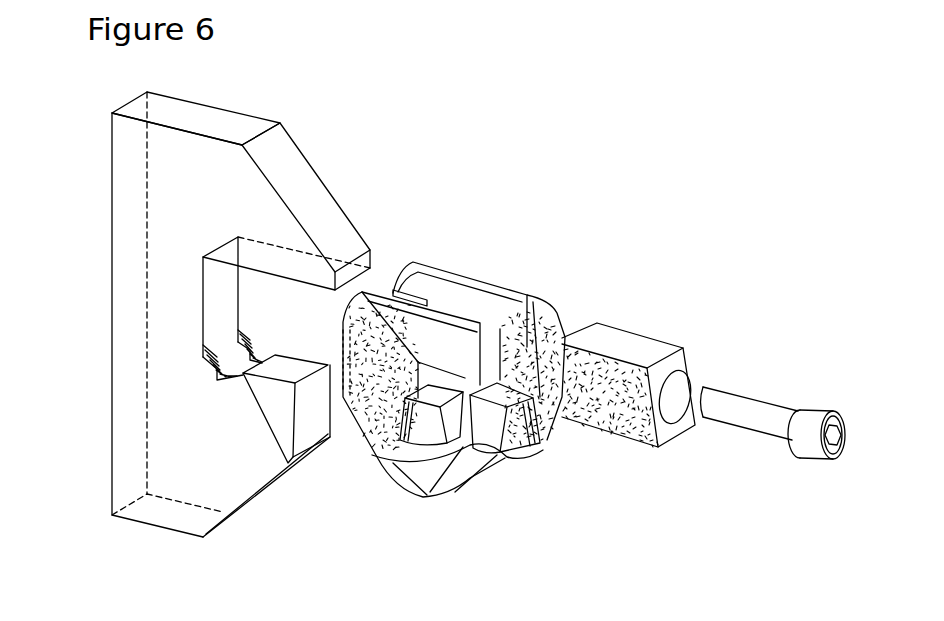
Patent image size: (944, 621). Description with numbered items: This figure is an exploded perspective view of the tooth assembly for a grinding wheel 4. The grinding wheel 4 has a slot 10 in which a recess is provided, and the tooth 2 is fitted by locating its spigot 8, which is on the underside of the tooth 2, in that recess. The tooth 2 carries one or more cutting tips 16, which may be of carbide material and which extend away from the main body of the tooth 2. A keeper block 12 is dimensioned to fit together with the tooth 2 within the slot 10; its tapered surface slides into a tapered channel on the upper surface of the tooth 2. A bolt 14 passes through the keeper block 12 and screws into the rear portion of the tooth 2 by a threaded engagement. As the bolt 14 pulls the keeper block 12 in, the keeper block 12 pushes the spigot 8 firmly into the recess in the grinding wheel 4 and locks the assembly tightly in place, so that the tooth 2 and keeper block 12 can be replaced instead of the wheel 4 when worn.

The tooth 2 is at (538, 293).
The grinding wheel 4 is at (183, 515).
The spigot 8 is at (393, 448).
The slot 10 is at (247, 392).
The keeper block 12 is at (650, 340).
The bolt 14 is at (730, 428).
The tips 16 is at (528, 455).